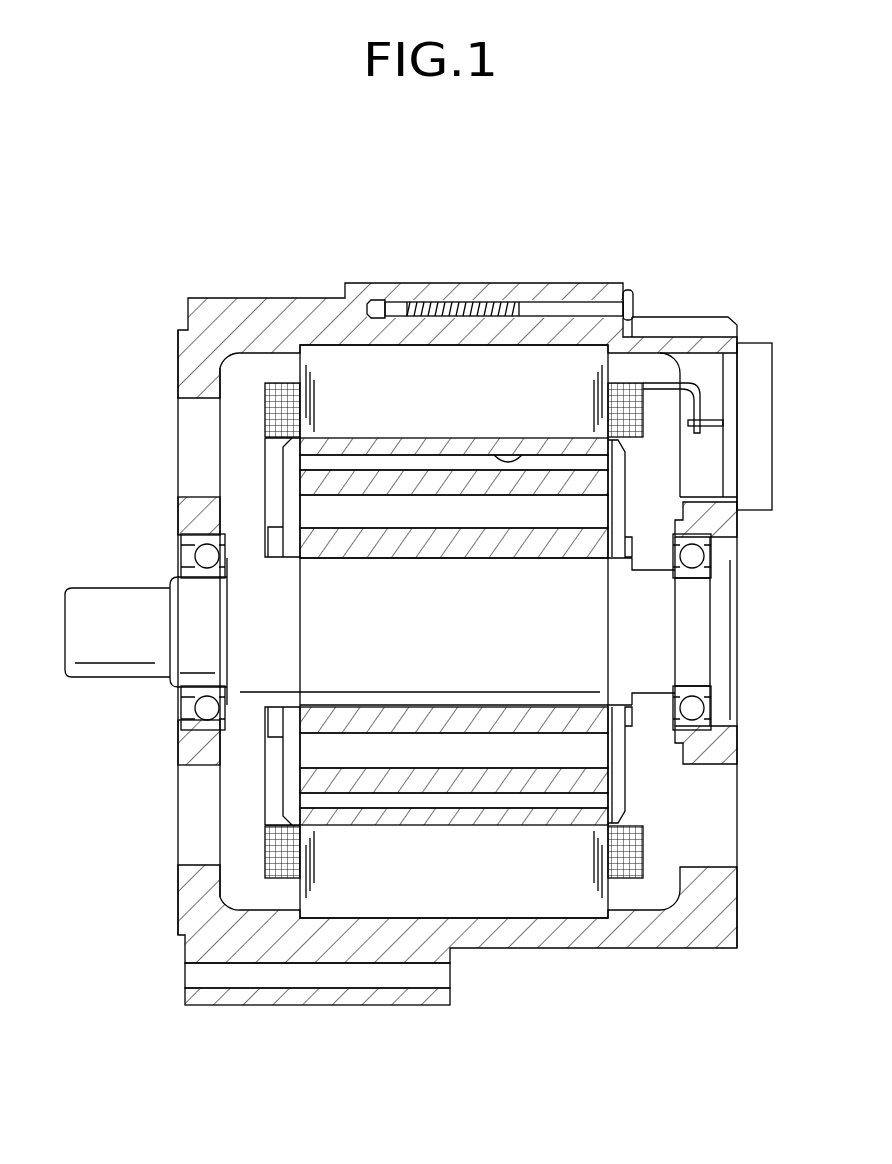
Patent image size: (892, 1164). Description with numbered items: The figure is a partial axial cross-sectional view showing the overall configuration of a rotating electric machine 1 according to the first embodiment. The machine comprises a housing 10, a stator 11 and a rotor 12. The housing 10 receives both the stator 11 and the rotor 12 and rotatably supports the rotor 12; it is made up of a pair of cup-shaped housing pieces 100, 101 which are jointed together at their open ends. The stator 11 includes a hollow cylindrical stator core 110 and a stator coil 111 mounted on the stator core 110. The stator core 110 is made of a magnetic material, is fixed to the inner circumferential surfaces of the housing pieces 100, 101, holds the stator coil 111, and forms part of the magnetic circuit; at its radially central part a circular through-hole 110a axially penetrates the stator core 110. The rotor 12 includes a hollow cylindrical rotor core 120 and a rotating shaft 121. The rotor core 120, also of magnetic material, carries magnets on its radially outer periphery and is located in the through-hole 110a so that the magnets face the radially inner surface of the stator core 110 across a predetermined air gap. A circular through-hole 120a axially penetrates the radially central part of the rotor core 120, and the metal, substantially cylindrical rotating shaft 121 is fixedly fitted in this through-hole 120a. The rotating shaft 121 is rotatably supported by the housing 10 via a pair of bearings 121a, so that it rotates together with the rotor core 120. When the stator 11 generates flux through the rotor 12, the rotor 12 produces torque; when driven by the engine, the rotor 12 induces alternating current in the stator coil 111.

The rotating electric machine 1 is at (719, 172).
The housing 10 is at (310, 298).
The housing piece 100 is at (360, 297).
The housing piece 101 is at (498, 300).
The stator 11 is at (300, 357).
The stator core 110 is at (335, 392).
The through-hole 110a is at (522, 452).
The stator coil 111 is at (277, 413).
The rotor 12 is at (282, 497).
The rotor core 120 is at (350, 532).
The through-hole 120a is at (555, 568).
The rotating shaft 121 is at (240, 655).
The bearings 121a is at (206, 719).